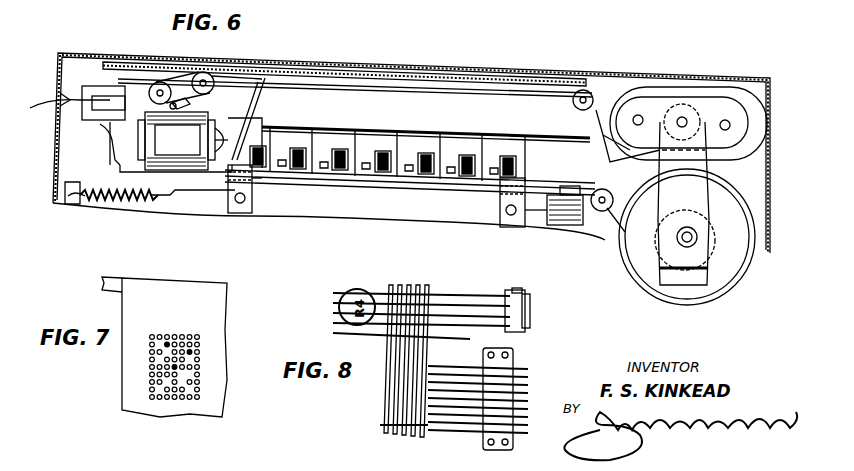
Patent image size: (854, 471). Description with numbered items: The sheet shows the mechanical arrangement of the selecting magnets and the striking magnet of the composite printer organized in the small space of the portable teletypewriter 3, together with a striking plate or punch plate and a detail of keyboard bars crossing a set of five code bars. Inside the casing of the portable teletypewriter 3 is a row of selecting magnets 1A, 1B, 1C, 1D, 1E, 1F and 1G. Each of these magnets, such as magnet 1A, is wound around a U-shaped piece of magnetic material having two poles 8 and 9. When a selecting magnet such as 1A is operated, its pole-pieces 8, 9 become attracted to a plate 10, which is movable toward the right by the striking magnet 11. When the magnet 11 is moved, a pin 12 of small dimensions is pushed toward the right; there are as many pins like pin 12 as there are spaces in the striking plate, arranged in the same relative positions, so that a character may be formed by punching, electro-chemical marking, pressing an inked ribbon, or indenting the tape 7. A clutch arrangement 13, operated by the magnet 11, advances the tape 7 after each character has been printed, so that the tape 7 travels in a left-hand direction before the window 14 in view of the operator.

The portable teletypewriter 3 is at (688, 80).
The tape 7 is at (137, 110).
The window 14 is at (420, 70).
The clutch arrangement 13 is at (97, 90).
The magnet 11 is at (183, 141).
The pin 12 is at (289, 124).
The magnet 1A is at (258, 146).
The magnet 1B is at (298, 148).
The magnet 1C is at (340, 149).
The magnet 1D is at (383, 151).
The magnet 1E is at (426, 153).
The magnet 1F is at (467, 155).
The magnet 1G is at (508, 156).
The pole 8 is at (252, 185).
The pole 9 is at (275, 178).
The plate 10 is at (360, 188).